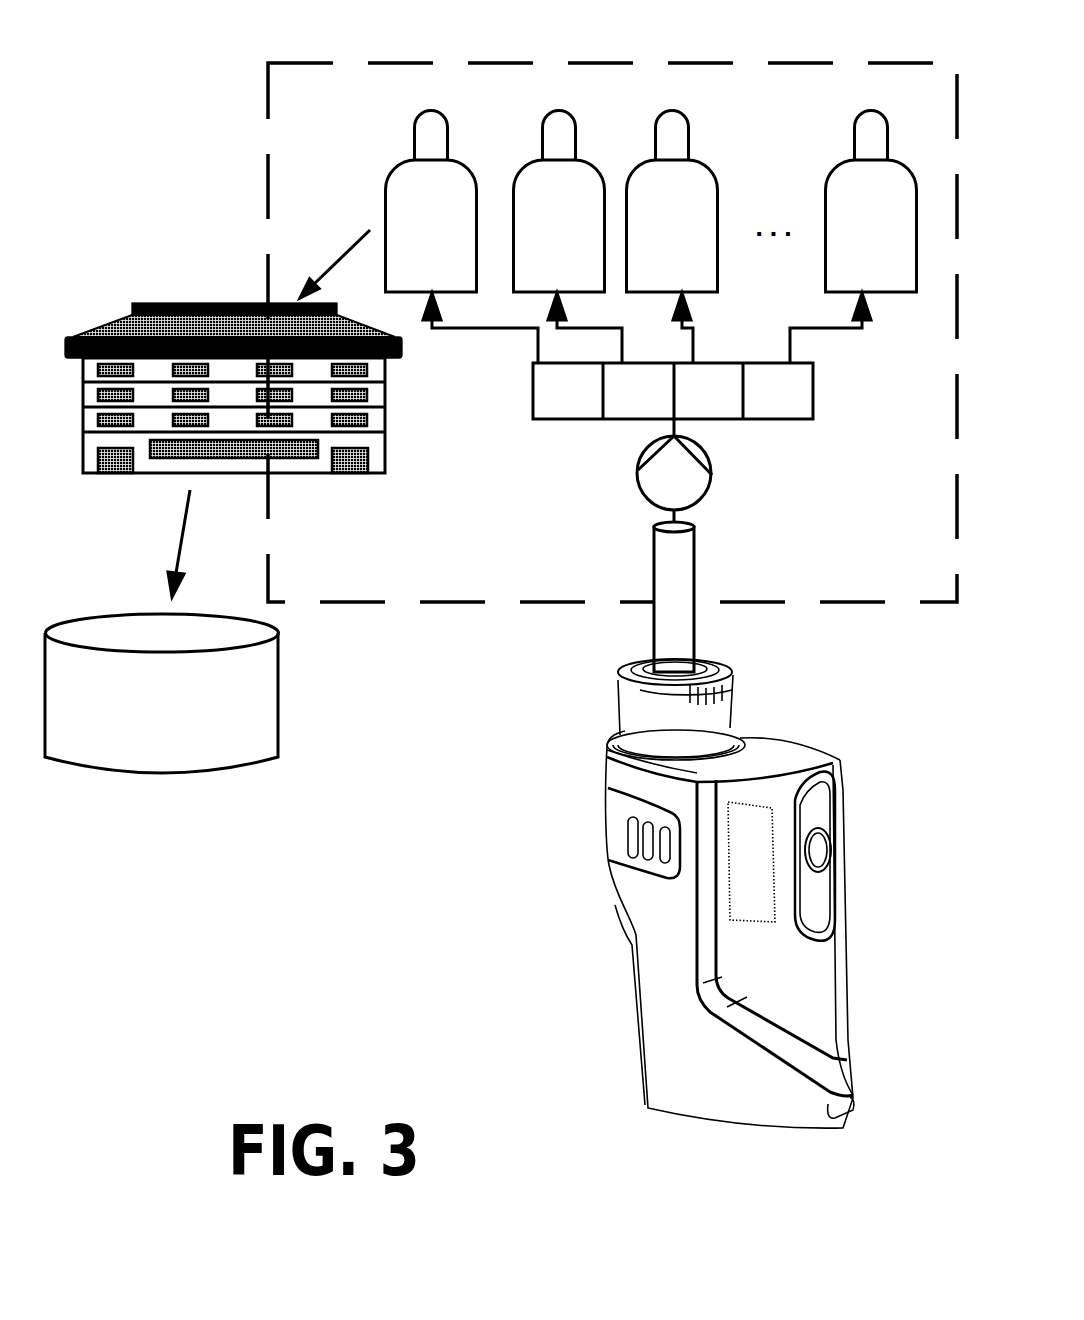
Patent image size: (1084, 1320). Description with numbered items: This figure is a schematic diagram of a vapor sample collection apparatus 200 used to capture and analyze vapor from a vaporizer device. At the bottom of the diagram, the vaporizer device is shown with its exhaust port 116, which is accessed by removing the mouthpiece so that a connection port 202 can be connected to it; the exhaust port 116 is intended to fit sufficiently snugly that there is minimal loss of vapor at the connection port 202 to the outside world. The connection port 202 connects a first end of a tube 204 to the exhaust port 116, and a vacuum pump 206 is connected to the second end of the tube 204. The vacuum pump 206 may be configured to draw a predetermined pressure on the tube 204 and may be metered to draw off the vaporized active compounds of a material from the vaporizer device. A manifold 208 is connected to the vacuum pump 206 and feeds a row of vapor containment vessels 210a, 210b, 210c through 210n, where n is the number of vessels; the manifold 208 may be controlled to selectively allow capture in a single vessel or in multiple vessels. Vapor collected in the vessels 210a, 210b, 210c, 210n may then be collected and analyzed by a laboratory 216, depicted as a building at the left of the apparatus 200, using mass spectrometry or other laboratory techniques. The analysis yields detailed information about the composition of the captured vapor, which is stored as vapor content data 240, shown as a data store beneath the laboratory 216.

The vapor sample collection apparatus 200 is at (362, 132).
The vapor containment vessel 210a is at (410, 232).
The vapor containment vessel 210b is at (538, 232).
The vapor containment vessel 210c is at (651, 232).
The vapor containment vessel 210n is at (850, 232).
The manifold 208 is at (813, 390).
The vacuum pump 206 is at (712, 478).
The tube 204 is at (662, 636).
The connection port 202 is at (648, 658).
The exhaust port 116 is at (695, 660).
The laboratory 216 is at (233, 365).
The vapor content data 240 is at (148, 745).